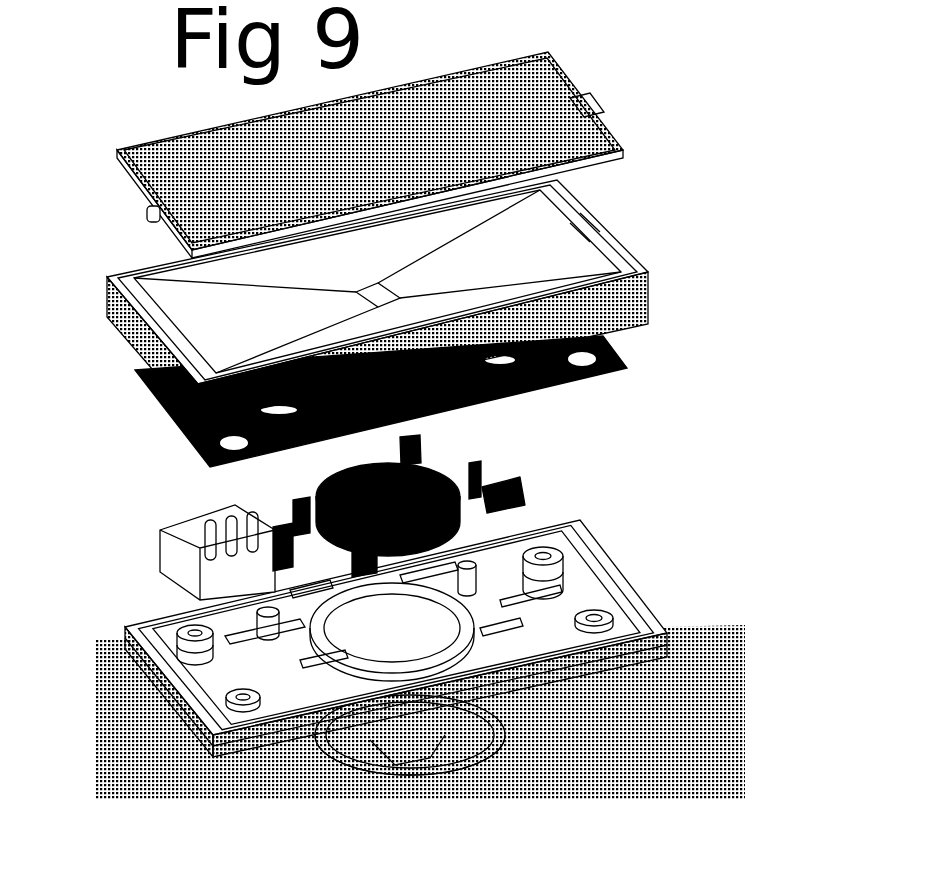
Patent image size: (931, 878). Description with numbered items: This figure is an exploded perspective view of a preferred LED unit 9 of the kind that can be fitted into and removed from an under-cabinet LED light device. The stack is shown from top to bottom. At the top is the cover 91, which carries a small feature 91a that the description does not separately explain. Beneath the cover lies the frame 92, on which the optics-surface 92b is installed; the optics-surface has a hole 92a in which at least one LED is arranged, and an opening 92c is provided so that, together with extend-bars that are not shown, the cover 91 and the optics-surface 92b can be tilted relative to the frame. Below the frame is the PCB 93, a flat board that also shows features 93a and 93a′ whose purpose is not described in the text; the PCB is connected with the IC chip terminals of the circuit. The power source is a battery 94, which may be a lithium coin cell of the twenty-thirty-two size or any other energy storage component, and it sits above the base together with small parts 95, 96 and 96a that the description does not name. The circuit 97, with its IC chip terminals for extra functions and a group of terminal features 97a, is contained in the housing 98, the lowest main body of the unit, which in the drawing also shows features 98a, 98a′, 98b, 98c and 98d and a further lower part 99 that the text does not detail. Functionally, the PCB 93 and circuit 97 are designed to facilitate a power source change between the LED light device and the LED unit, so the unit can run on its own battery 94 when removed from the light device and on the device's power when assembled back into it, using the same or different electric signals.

The radio-frequency identification device (overall assembly) 9 is at (48, 112).
The cover 91 is at (354, 150).
The cover tab 91a is at (142, 217).
The frame 92 is at (403, 301).
The hole 92a is at (373, 298).
The optics-surface 92b is at (633, 261).
The opening 92c is at (595, 232).
The PCB 93 is at (399, 406).
The shield plate hole 93a is at (592, 374).
The shield plate hole 93a′ is at (232, 444).
The battery 94 is at (345, 482).
The battery contact 95 is at (420, 443).
The electronic component 96 is at (523, 485).
The component lead 96a is at (482, 468).
The circuit 97 is at (189, 539).
The connector terminals 97a is at (209, 583).
The housing 98 is at (406, 631).
The mounting boss 98a is at (602, 615).
The mounting boss 98a′ is at (233, 703).
The antenna ring 98b is at (437, 637).
The base plate rim 98c is at (616, 567).
The base plate ledge 98d is at (660, 628).
The bottom dish 99 is at (465, 740).